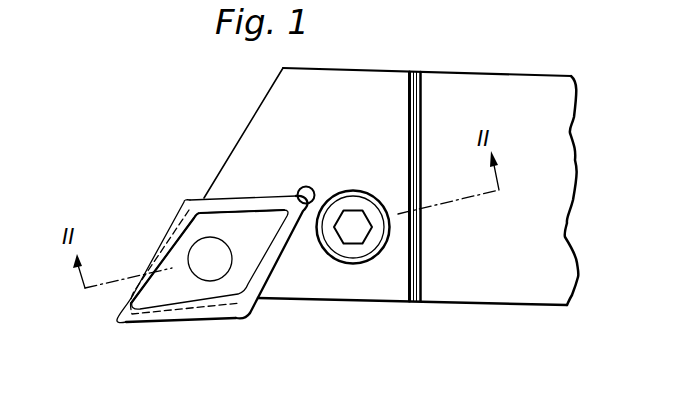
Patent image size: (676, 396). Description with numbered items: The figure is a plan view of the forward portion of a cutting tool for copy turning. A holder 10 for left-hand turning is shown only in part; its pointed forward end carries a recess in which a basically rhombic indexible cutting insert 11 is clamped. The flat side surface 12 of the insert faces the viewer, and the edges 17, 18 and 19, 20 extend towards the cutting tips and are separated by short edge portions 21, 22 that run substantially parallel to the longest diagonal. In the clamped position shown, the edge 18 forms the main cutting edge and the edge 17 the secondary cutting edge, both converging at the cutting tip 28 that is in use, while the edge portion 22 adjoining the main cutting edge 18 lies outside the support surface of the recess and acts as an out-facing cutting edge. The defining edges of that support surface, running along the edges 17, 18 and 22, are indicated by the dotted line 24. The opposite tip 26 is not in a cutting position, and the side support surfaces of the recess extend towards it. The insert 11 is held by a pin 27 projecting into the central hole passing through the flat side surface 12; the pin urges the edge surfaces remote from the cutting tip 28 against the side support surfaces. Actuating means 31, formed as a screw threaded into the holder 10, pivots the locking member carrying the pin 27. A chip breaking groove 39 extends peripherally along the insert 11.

The holder 10 is at (538, 132).
The indexible cutting insert 11 is at (202, 258).
The flat side surface 12 is at (215, 222).
The edge 17 is at (143, 258).
The edge 18 is at (168, 322).
The edge 19 is at (253, 197).
The edge 20 is at (290, 255).
The edge portion 21 is at (178, 210).
The edge portion 22 is at (243, 312).
The dotted line 24 is at (137, 322).
The tip 26 is at (306, 190).
The pin 27 is at (213, 253).
The cutting tip 28 is at (115, 307).
The actuating means 31 is at (345, 203).
The chip breaking groove 39 is at (177, 212).